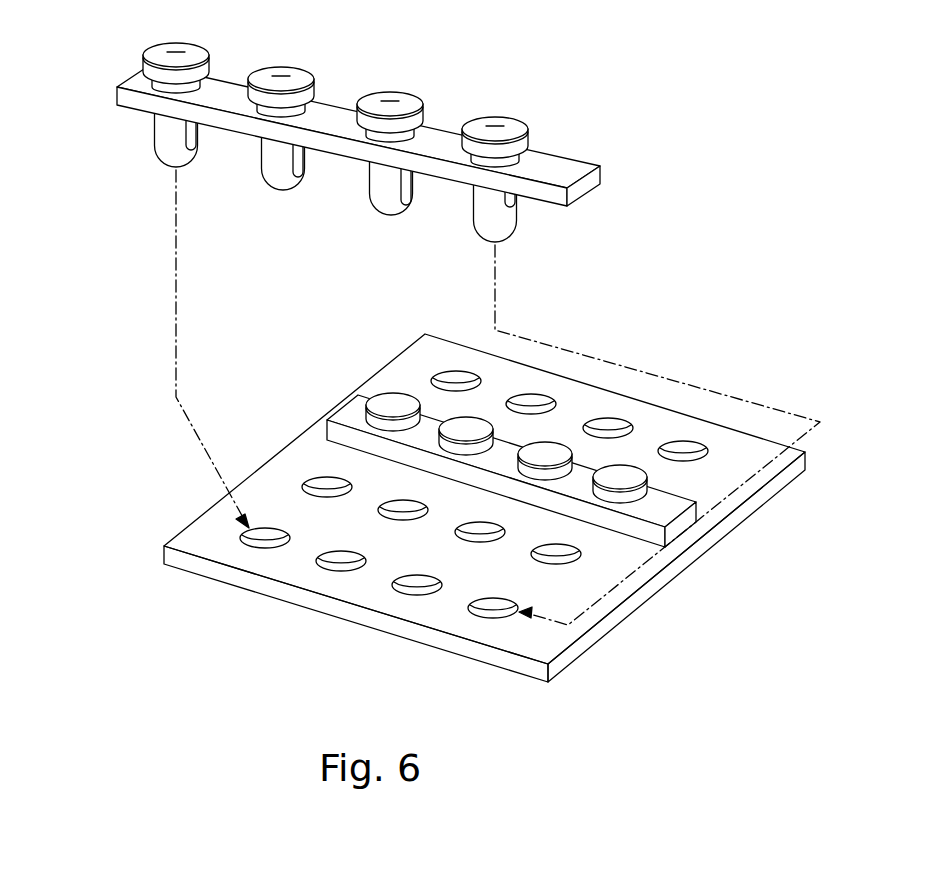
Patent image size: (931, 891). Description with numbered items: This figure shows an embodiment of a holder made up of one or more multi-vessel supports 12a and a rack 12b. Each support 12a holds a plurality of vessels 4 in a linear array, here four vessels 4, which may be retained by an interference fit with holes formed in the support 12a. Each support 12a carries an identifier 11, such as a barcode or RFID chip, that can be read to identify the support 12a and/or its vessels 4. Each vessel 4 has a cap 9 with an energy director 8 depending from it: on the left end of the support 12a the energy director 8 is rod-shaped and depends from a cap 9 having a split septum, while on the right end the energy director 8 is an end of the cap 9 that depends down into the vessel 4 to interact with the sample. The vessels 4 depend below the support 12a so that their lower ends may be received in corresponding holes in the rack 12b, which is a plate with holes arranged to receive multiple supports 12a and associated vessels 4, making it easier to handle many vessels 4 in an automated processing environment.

The vessel 4 is at (155, 138).
The energy director 8 is at (193, 137).
The cap 9 is at (186, 44).
The identifier 11 is at (576, 165).
The multi-vessel support 12a is at (118, 94).
The rack 12b is at (165, 555).